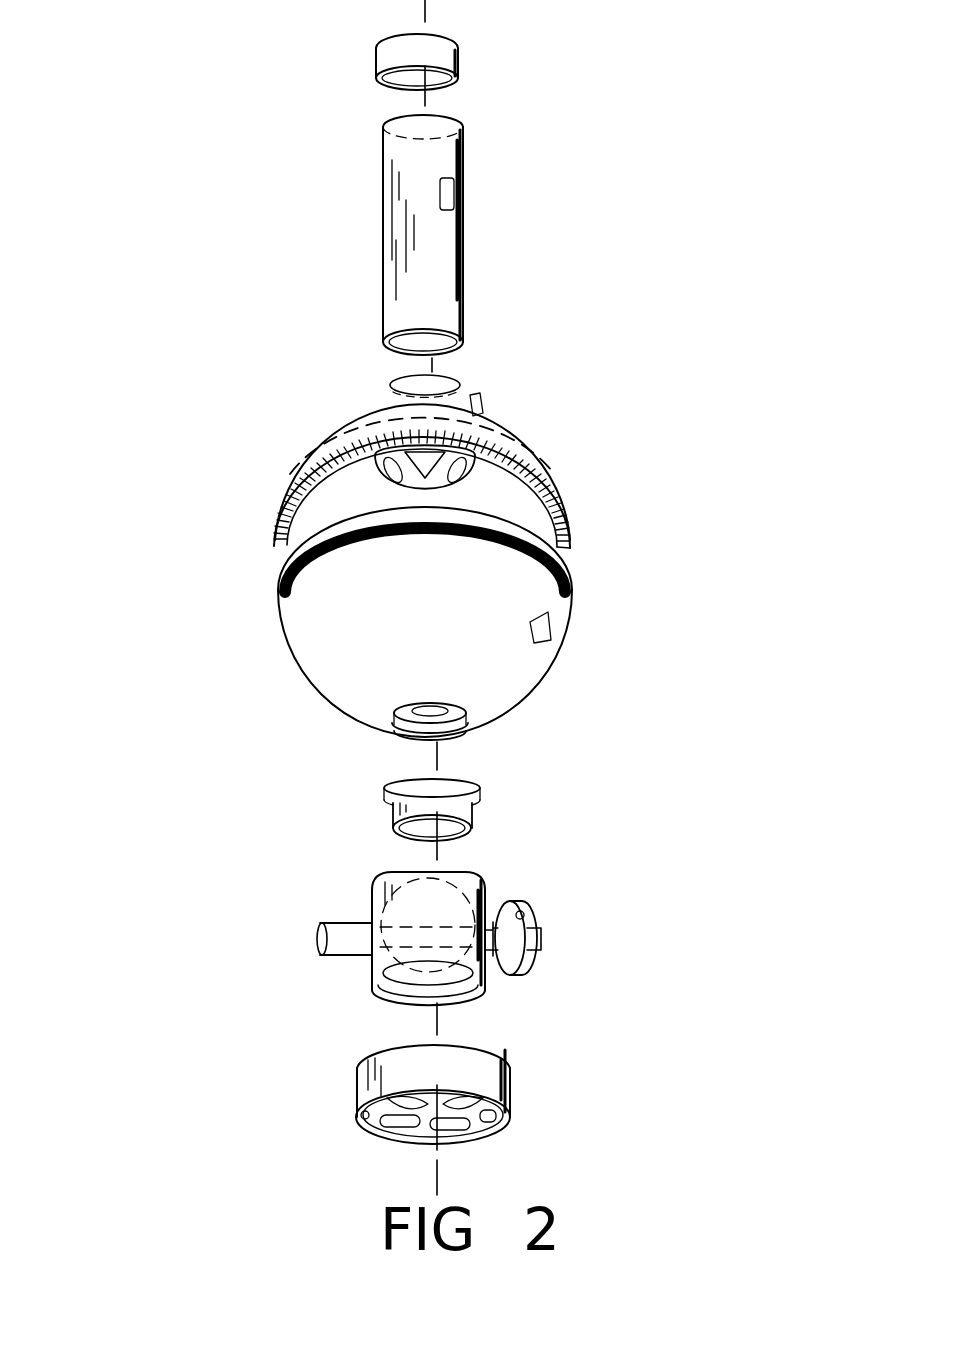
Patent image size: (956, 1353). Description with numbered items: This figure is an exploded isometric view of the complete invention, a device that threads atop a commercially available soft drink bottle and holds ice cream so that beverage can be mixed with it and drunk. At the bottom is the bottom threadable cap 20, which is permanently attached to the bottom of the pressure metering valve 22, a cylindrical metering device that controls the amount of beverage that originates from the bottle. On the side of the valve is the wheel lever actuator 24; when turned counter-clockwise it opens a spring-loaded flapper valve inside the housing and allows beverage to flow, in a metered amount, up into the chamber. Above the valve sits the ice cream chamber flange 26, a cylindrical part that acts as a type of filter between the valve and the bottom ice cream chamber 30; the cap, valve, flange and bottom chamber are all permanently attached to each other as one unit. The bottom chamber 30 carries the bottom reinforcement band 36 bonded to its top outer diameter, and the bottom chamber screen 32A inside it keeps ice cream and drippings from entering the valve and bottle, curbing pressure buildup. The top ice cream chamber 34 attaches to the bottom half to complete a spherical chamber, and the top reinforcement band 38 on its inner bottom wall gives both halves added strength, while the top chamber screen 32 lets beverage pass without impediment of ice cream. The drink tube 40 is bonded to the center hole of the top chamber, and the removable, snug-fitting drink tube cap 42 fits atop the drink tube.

The bottom threadable cap 20 is at (478, 1066).
The pressure metering valve 22 is at (378, 889).
The wheel lever actuator 24 is at (541, 948).
The ice cream chamber flange 26 is at (452, 800).
The bottom ice cream chamber 30 is at (357, 614).
The top chamber screen 32 is at (392, 486).
The bottom chamber screen 32A is at (470, 712).
The top ice cream chamber 34 is at (372, 410).
The bottom reinforcement band 36 is at (443, 514).
The top reinforcement band 38 is at (470, 448).
The drink tube 40 is at (442, 220).
The drink tube cap 42 is at (395, 42).